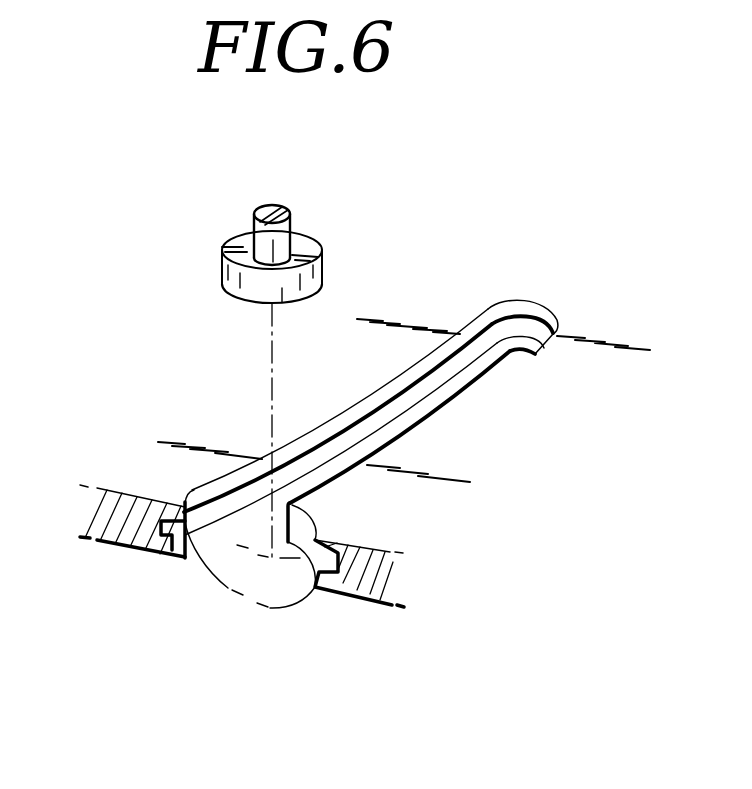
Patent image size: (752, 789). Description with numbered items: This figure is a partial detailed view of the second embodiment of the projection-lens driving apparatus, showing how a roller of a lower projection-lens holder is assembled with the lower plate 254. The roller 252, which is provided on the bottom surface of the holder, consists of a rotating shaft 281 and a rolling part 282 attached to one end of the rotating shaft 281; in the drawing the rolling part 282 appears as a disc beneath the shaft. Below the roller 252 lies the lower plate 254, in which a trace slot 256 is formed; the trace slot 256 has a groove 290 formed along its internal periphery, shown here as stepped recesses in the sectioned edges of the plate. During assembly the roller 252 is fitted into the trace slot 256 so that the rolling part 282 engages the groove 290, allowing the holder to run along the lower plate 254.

The roller 252 is at (349, 215).
The lower plate 254 is at (497, 462).
The trace slot 256 is at (517, 333).
The rotating shaft 281 is at (279, 208).
The rolling part 282 is at (323, 278).
The groove 290 is at (323, 563).